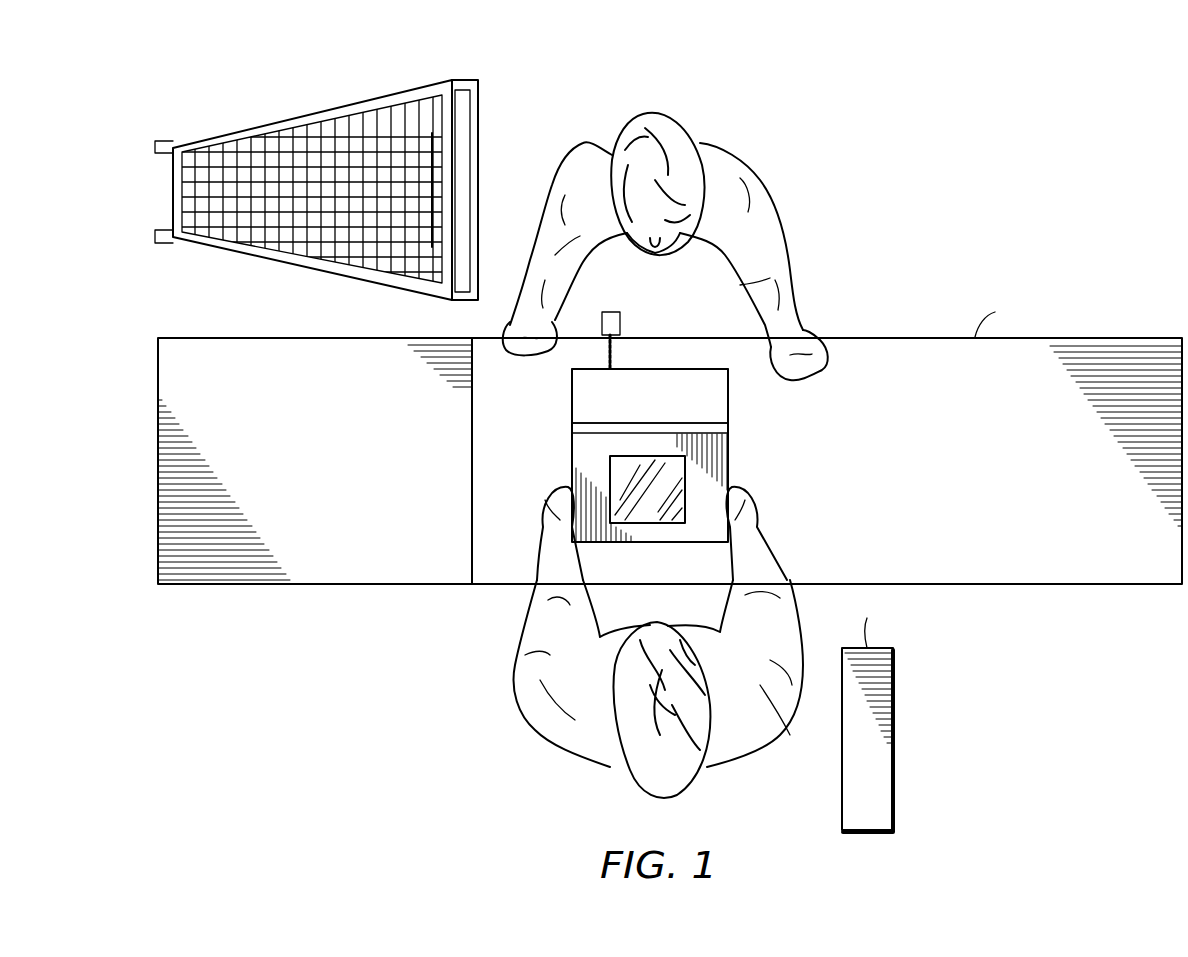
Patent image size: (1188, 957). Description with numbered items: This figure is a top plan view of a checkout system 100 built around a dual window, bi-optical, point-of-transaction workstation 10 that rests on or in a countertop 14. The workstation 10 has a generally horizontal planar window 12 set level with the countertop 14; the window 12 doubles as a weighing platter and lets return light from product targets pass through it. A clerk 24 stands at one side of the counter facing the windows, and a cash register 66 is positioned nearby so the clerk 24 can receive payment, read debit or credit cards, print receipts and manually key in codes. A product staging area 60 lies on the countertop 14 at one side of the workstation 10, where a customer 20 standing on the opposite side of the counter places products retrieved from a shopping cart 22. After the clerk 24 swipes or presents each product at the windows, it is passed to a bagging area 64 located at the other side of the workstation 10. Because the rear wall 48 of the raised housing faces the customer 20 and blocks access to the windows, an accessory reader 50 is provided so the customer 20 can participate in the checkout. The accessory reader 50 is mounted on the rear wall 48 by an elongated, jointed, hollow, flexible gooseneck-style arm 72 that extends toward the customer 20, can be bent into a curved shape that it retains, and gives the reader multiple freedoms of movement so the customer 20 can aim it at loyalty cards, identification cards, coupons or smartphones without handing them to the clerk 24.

The bi-optical point-of-transaction workstation 10 is at (648, 362).
The horizontal planar window 12 is at (643, 508).
The countertop 14 is at (1135, 367).
The customer 20 is at (662, 130).
The shopping cart 22 is at (260, 243).
The clerk 24 is at (640, 788).
The rear wall 48 is at (710, 363).
The accessory reader 50 is at (596, 324).
The product staging area 60 is at (990, 531).
The bagging area 64 is at (180, 478).
The cash register 66 is at (897, 762).
The flexible arm 72 is at (607, 352).
The checkout system 100 is at (820, 178).